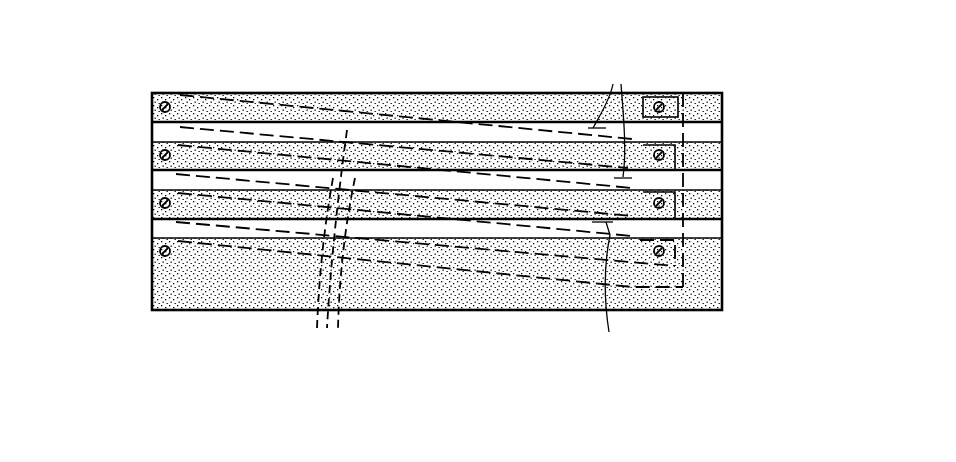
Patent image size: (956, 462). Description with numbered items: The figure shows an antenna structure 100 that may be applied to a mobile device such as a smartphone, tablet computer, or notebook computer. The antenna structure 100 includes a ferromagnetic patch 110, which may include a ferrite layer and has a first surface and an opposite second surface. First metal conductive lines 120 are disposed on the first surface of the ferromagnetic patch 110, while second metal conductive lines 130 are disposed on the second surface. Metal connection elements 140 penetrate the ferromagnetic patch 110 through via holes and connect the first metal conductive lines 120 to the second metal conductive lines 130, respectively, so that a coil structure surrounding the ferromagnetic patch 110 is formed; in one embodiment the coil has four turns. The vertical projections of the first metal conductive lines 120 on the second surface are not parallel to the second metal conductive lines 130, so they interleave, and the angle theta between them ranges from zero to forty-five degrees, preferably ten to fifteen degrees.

The antenna structure 100 is at (110, 57).
The ferromagnetic patch 110 is at (722, 297).
The first metal conductive lines 120 is at (712, 107).
The second metal conductive lines 130 is at (332, 245).
The metal connection elements 140 is at (170, 108).